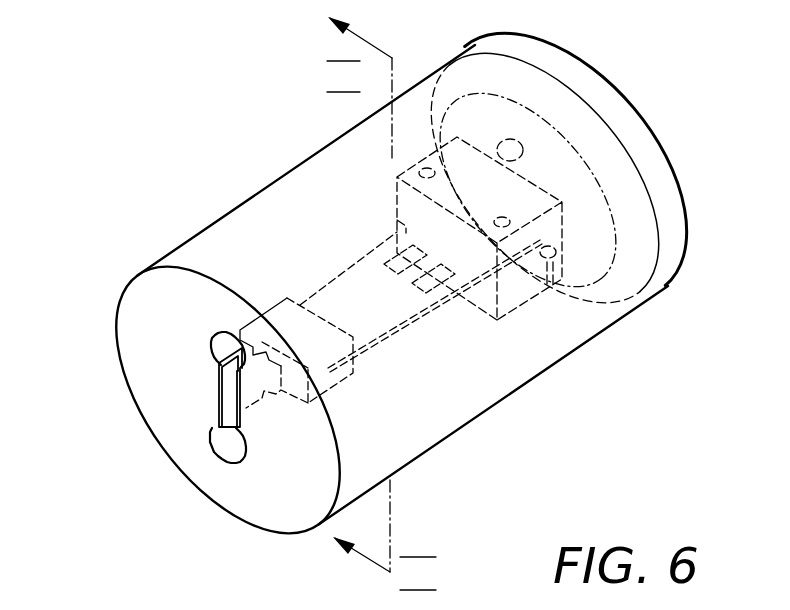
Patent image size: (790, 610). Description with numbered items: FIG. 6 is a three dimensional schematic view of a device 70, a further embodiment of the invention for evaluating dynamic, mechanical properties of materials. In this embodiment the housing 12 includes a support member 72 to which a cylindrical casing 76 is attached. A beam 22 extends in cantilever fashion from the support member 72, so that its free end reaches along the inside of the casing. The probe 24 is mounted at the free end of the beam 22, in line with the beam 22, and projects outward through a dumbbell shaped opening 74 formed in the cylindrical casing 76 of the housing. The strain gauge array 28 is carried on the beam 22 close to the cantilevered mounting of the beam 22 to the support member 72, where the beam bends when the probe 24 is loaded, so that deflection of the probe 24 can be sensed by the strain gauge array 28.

The device 70 is at (163, 128).
The housing 12 is at (142, 259).
The support member 72 is at (651, 162).
The cylindrical casing 76 is at (440, 442).
The dumbbell shaped opening 74 is at (228, 449).
The probe 24 is at (230, 398).
The beam 22 is at (389, 331).
The strain gauge array 28 is at (396, 252).